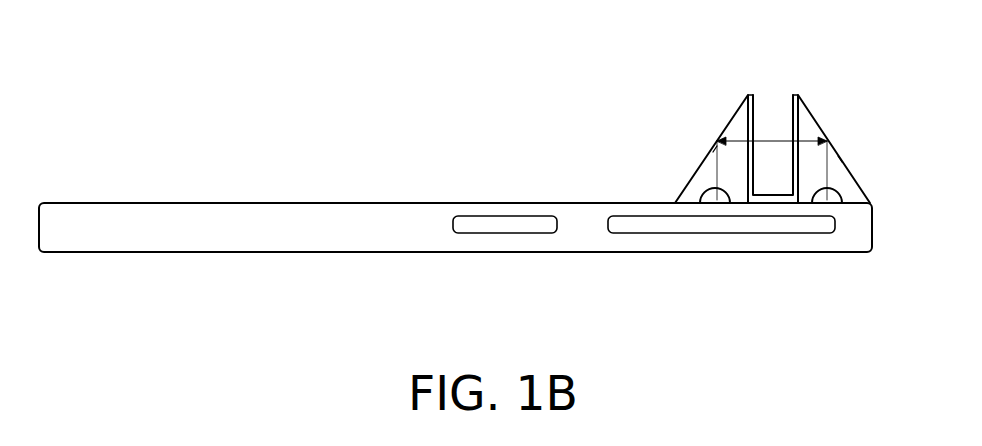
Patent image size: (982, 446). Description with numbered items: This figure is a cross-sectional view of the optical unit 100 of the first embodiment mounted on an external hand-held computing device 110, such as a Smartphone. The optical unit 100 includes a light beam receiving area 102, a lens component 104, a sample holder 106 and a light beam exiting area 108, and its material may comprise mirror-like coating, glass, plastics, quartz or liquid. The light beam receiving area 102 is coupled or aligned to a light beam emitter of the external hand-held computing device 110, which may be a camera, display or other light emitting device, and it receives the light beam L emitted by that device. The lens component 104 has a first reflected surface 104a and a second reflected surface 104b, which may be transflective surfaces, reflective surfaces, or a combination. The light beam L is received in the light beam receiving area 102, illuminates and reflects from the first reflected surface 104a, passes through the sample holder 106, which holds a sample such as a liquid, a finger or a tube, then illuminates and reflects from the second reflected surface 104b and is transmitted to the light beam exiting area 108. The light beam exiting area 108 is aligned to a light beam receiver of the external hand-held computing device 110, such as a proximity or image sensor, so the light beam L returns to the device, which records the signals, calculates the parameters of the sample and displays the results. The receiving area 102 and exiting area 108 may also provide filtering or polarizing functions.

The optical unit 100 is at (772, 111).
The light beam receiving area 102 is at (708, 198).
The lens component 104 is at (737, 128).
The first reflected surface 104a is at (713, 152).
The second reflected surface 104b is at (842, 162).
The sample holder 106 is at (797, 95).
The light beam exiting area 108 is at (818, 198).
The external hand-held computing device 110 is at (313, 217).
The light beam L is at (716, 173).